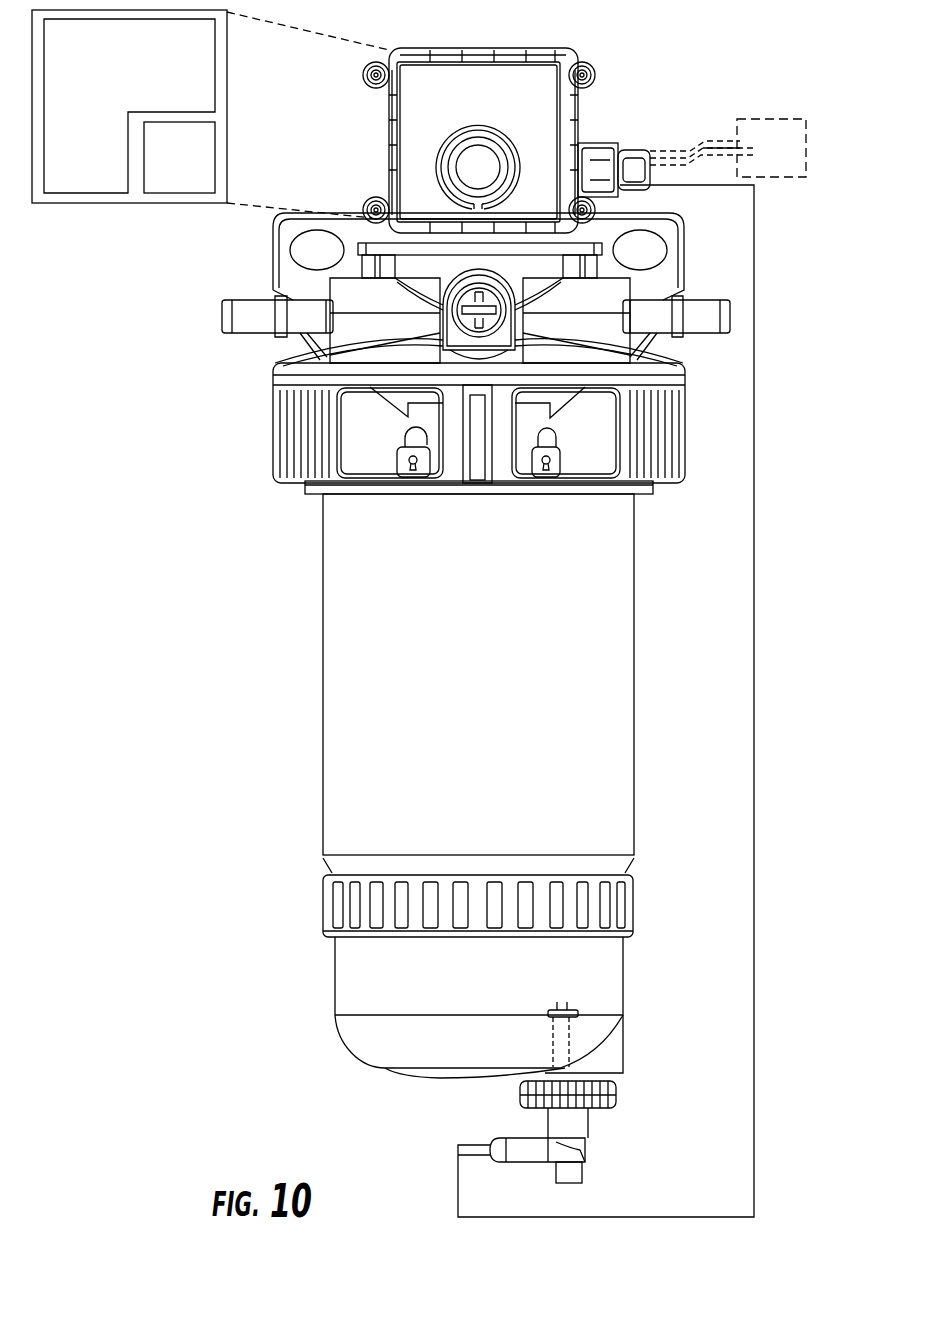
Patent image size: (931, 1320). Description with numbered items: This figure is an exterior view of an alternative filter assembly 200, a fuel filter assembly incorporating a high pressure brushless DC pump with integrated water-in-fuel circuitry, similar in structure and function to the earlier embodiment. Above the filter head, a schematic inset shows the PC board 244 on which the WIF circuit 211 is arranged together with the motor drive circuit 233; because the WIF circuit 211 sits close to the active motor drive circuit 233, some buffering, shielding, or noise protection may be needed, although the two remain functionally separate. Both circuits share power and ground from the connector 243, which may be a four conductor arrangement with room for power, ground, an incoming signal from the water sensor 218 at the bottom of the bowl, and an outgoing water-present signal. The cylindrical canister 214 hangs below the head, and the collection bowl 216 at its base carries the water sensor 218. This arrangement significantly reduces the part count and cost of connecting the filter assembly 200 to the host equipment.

The filter assembly 200 is at (230, 398).
The WIF circuit 211 is at (198, 167).
The filter housing 214 is at (322, 708).
The collection bowl 216 is at (330, 980).
The water sensor 218 is at (560, 1040).
The motor drive circuit 233 is at (123, 80).
The connector 243 is at (758, 118).
The PC board 244 is at (93, 203).